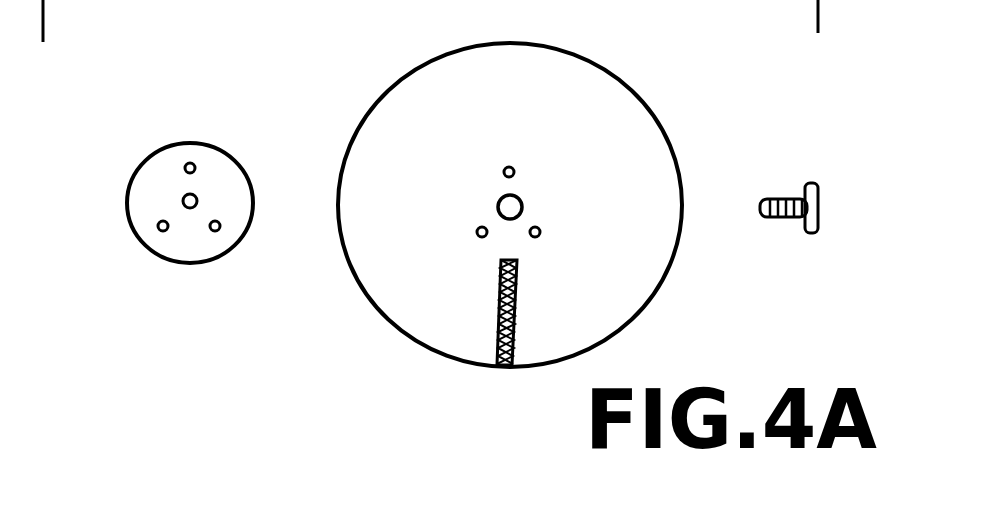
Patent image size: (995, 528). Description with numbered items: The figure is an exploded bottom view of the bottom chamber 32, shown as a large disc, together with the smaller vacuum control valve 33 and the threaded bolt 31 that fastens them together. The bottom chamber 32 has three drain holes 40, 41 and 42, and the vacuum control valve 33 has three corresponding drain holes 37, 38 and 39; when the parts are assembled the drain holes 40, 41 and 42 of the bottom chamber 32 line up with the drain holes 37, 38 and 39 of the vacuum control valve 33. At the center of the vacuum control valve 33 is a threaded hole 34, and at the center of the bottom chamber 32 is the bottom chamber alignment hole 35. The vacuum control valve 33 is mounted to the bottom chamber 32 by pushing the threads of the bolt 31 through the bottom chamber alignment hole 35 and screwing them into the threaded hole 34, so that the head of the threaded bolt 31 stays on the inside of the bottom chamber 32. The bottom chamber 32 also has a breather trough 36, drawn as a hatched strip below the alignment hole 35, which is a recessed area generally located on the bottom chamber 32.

The threaded bolt 31 is at (815, 183).
The bottom chamber 32 is at (643, 98).
The vacuum control valve 33 is at (128, 202).
The threaded hole 34 is at (182, 205).
The bottom chamber alignment hole 35 is at (504, 218).
The breather trough 36 is at (505, 366).
The drain hole 37 is at (191, 163).
The drain hole 38 is at (162, 231).
The drain hole 39 is at (216, 231).
The drain hole 40 is at (507, 166).
The drain hole 41 is at (478, 237).
The drain hole 42 is at (540, 236).